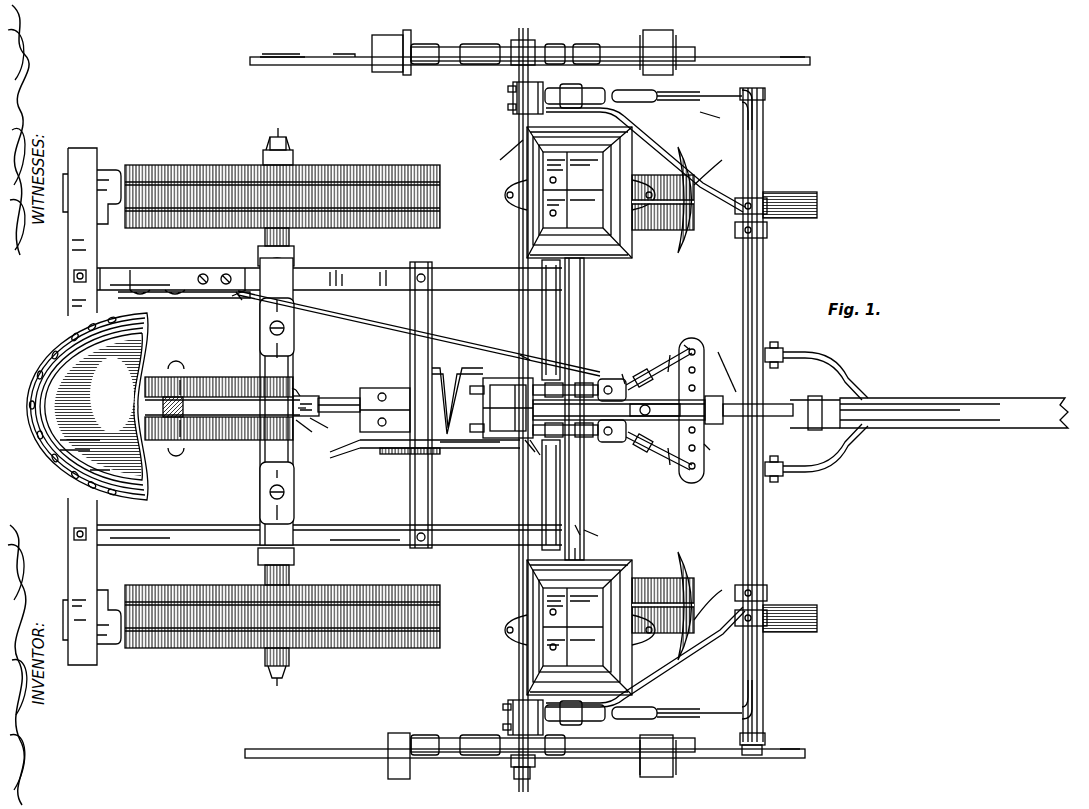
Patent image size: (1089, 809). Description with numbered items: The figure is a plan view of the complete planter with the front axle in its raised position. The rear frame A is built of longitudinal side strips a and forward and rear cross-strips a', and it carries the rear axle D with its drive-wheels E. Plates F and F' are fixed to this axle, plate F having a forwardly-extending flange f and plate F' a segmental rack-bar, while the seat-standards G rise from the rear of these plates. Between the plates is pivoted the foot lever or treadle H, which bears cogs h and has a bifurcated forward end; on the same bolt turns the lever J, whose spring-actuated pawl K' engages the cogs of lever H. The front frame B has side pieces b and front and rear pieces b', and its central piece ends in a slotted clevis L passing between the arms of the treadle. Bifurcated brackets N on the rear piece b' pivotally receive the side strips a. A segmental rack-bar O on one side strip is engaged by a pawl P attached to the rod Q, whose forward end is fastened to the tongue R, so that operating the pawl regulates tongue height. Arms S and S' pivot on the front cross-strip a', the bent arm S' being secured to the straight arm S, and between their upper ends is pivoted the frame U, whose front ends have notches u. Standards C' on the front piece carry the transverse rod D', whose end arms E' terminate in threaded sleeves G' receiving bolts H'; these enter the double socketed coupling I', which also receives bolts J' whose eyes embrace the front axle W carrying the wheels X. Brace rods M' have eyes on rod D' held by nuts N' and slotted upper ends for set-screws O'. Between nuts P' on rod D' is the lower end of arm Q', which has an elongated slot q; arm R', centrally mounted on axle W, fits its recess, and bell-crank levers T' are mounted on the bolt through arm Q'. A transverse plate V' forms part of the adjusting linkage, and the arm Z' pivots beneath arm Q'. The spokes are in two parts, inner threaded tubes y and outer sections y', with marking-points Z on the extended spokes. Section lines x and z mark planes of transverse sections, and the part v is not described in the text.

The rear frame A is at (360, 262).
The longitudinal side strips a is at (255, 407).
The cross-strips a' is at (247, 406).
The front frame B is at (584, 318).
The side pieces b is at (810, 412).
The front and rear pieces b' is at (689, 517).
The standards C' is at (767, 411).
The rear axle D is at (263, 401).
The transverse rod D' is at (770, 415).
The drive-wheels E is at (282, 397).
The arms E' is at (713, 403).
The plate F is at (308, 392).
The plate F' is at (452, 447).
The flange f is at (306, 394).
The seat-standards G is at (222, 411).
The screw-threaded sleeves G' is at (645, 407).
The foot lever or treadle H is at (113, 406).
The bolts H' is at (648, 408).
The teeth or cogs h is at (299, 377).
The double socketed coupling I' is at (553, 418).
The bar or lever J is at (339, 393).
The arms or bolts J' is at (505, 408).
The pawl K' is at (599, 535).
The slotted clevis L is at (385, 398).
The brace rods M' is at (708, 385).
The bifurcated brackets N is at (503, 410).
The adjustable nuts N' is at (786, 397).
The segmental rack-bar O is at (223, 304).
The set-screws O' is at (496, 154).
The spring-actuated pawl P is at (175, 282).
The adjustable nuts P' is at (816, 414).
The rod Q is at (419, 333).
The arm Q' is at (728, 359).
The elongated slot q is at (688, 343).
The tongue or thill R is at (929, 404).
The arm R' is at (663, 410).
The arm S is at (450, 459).
The arm S' is at (457, 394).
The bell-crank levers T' is at (541, 378).
The frame U is at (502, 396).
The notches u is at (527, 347).
The transverse plate V' is at (596, 547).
The pin v is at (534, 457).
The front axle W is at (560, 320).
The wheels X is at (742, 58).
The section line x is at (276, 401).
The inner spoke parts y is at (510, 43).
The outer spoke sections y' is at (521, 410).
The marking-points Z is at (649, 406).
The arm Z' is at (649, 408).
The section line z is at (573, 521).